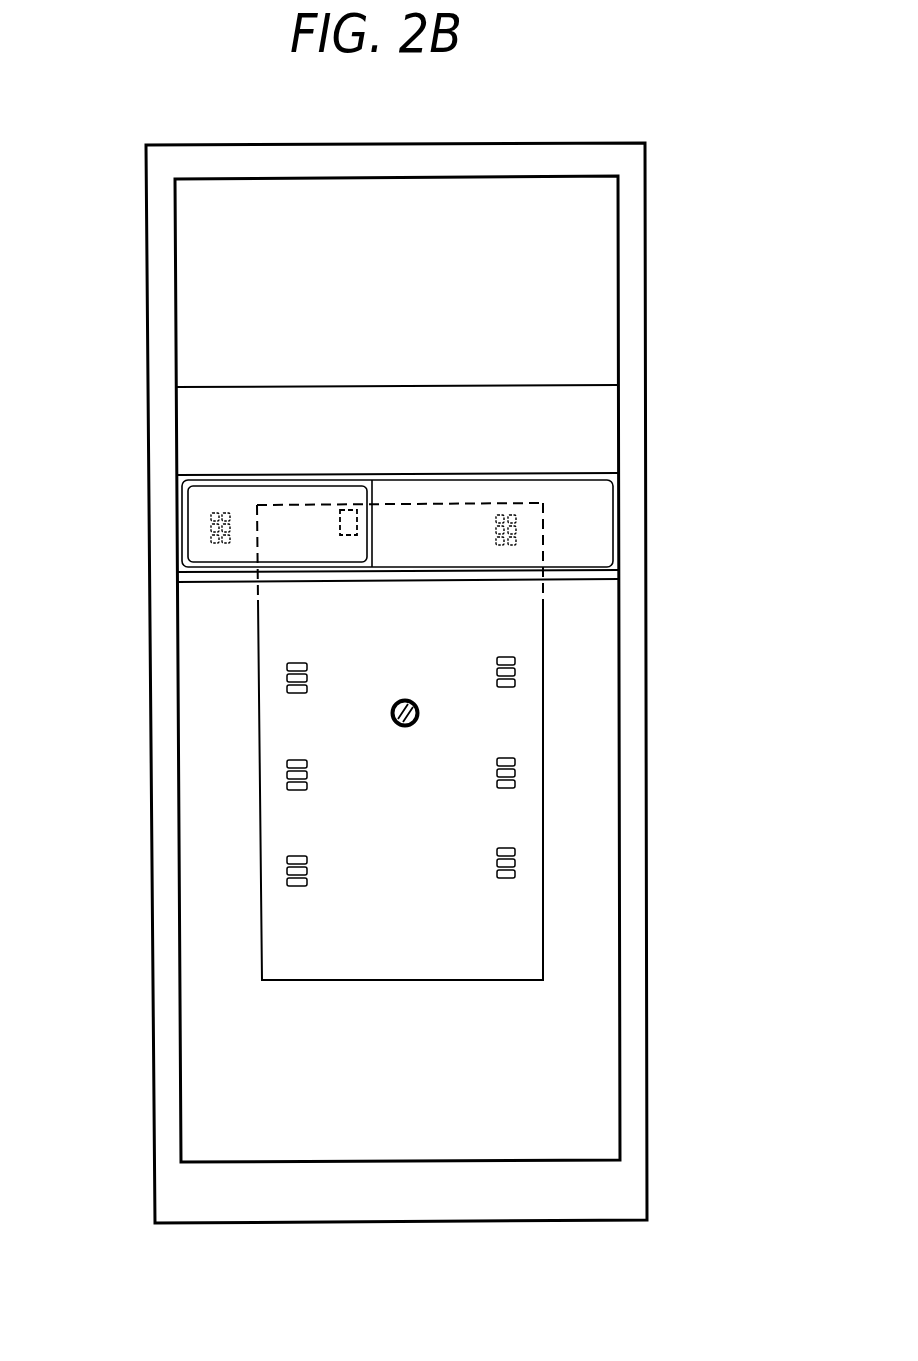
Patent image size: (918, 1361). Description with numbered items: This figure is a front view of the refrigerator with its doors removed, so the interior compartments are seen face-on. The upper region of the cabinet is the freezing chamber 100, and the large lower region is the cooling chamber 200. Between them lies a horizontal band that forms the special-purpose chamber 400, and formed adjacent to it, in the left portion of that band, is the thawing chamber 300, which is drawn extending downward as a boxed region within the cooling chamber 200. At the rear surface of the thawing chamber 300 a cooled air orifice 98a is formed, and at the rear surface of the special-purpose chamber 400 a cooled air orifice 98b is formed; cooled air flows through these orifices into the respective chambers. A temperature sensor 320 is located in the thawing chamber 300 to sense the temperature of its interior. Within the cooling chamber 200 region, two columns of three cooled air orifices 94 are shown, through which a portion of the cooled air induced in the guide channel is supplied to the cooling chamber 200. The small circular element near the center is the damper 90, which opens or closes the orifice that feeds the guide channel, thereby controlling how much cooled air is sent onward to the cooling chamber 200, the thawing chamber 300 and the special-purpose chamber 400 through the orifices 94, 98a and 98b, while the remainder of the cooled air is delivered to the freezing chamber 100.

The freezing chamber 100 is at (540, 202).
The cooling chamber 200 is at (542, 1122).
The thawing chamber 300 is at (298, 532).
The temperature sensor 320 is at (343, 513).
The special-purpose chamber 400 is at (580, 527).
The cooled air orifice 98a is at (210, 540).
The cooled air orifice 98b is at (513, 544).
The cooled air orifices 94 is at (287, 678).
The damper 90 is at (403, 728).